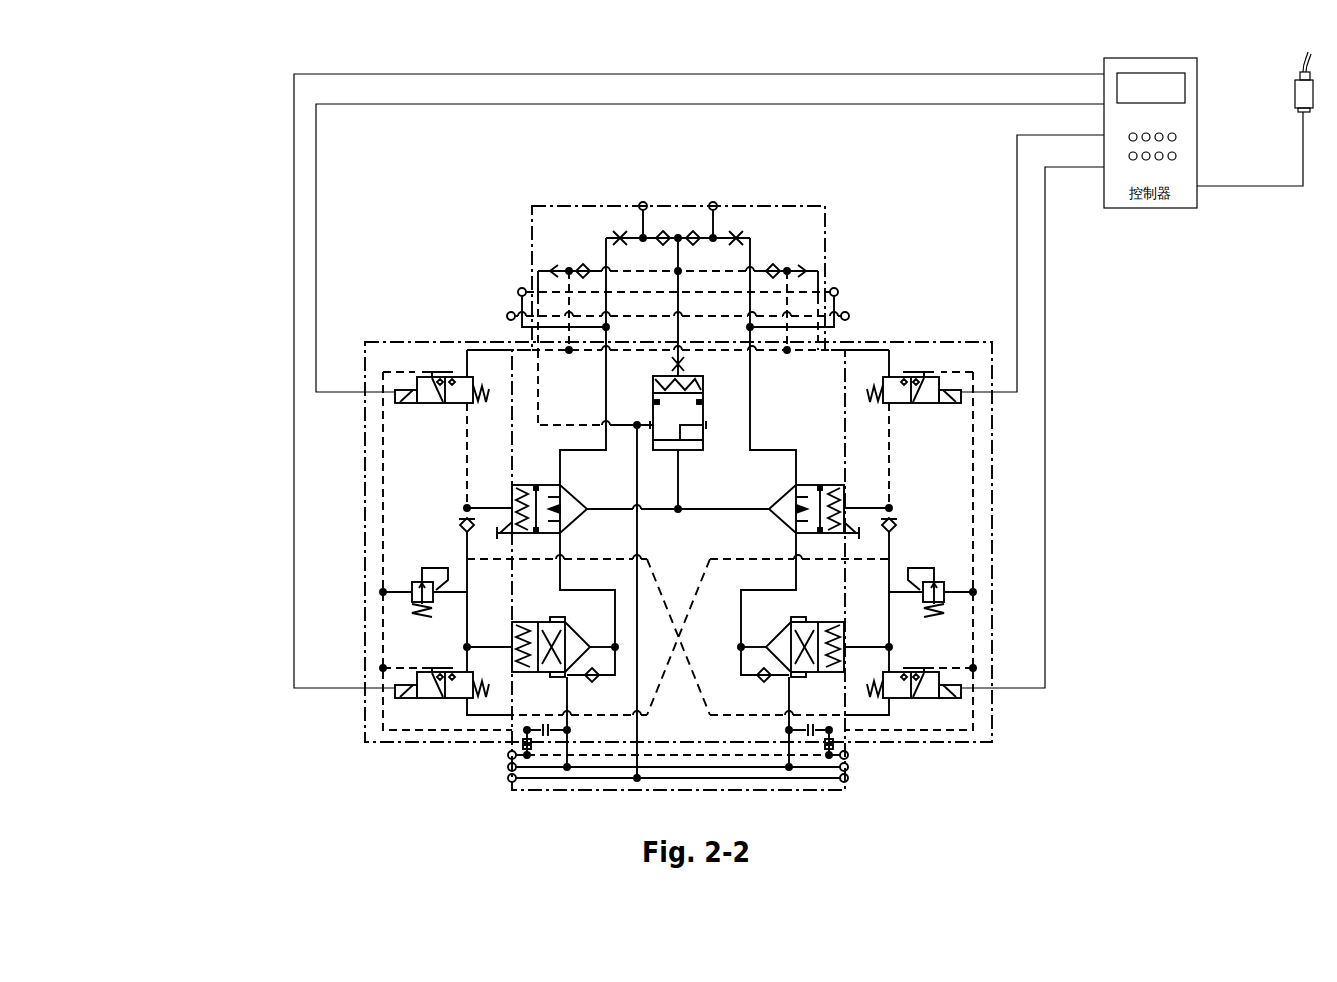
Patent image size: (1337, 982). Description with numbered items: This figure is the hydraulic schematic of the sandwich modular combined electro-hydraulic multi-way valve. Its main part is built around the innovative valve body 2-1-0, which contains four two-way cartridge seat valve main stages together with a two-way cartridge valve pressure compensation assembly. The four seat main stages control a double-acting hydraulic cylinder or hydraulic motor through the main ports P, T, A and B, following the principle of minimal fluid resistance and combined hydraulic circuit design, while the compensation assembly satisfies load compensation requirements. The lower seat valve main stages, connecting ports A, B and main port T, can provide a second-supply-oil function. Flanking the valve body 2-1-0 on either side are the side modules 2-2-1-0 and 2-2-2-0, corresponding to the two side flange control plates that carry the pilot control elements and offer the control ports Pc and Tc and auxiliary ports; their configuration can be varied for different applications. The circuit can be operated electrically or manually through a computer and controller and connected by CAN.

The valve body 2-1-0 is at (815, 398).
The left pilot control module 2-2-1-0 is at (425, 518).
The right pilot control module 2-2-2-0 is at (925, 500).